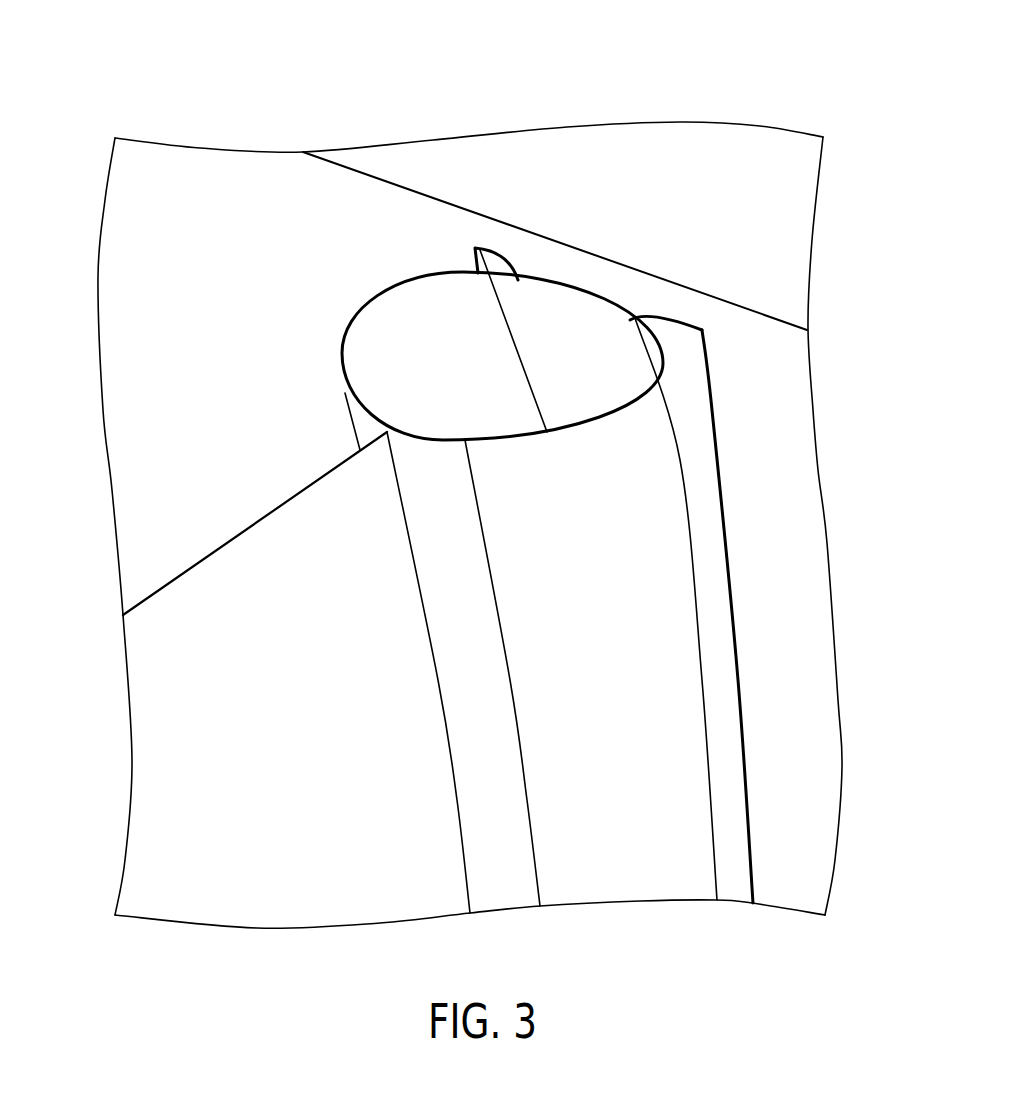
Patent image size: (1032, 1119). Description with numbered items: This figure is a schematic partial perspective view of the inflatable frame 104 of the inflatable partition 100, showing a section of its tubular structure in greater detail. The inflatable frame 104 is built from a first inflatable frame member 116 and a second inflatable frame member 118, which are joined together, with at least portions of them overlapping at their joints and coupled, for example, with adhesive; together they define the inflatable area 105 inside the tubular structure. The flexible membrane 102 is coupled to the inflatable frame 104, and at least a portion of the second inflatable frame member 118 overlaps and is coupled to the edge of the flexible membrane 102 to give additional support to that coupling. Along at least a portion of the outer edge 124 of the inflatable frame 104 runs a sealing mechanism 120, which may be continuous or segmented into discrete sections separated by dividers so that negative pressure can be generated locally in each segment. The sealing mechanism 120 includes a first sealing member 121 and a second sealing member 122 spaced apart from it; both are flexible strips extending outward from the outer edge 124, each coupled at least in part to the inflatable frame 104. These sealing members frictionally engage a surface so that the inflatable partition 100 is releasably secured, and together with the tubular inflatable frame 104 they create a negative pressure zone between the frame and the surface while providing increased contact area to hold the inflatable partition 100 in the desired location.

The inflatable partition 100 is at (100, 80).
The flexible membrane 102 is at (215, 589).
The inflatable frame 104 is at (772, 551).
The inflatable area 105 is at (421, 310).
The first inflatable frame member 116 is at (347, 357).
The second inflatable frame member 118 is at (637, 582).
The sealing mechanism 120 is at (845, 258).
The first sealing member 121 is at (493, 267).
The second sealing member 122 is at (693, 363).
The outer edge 124 is at (575, 307).